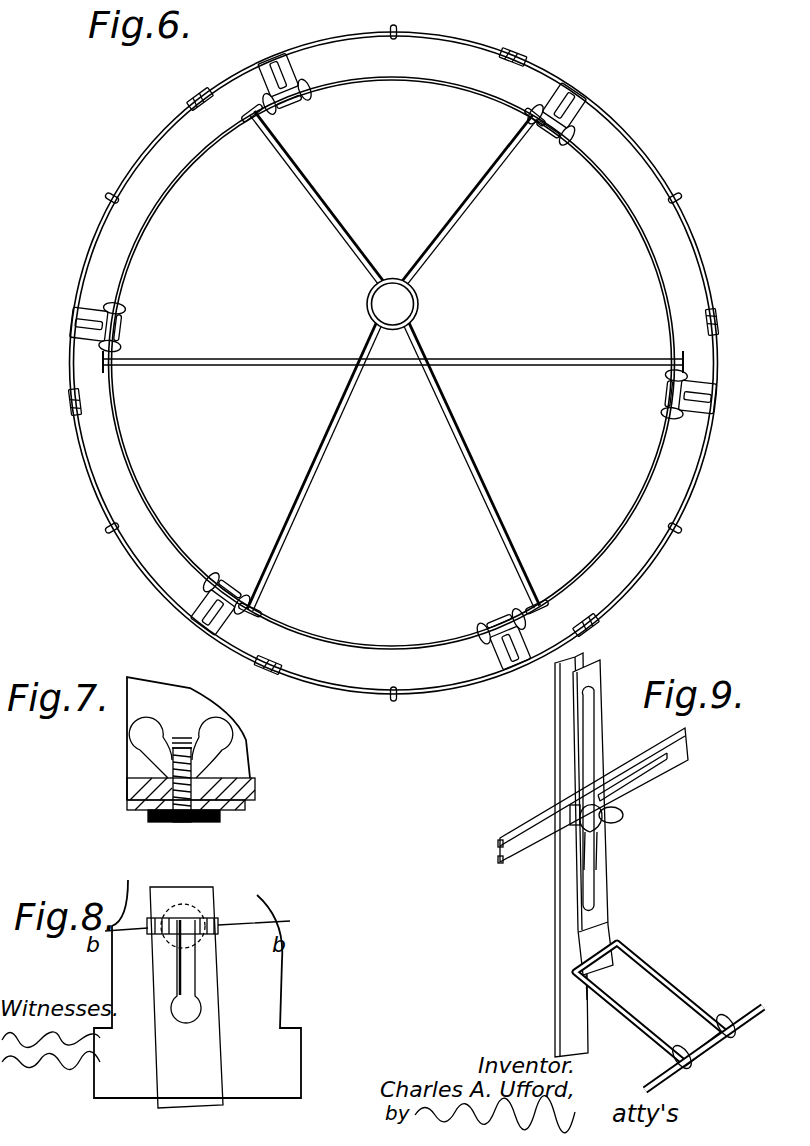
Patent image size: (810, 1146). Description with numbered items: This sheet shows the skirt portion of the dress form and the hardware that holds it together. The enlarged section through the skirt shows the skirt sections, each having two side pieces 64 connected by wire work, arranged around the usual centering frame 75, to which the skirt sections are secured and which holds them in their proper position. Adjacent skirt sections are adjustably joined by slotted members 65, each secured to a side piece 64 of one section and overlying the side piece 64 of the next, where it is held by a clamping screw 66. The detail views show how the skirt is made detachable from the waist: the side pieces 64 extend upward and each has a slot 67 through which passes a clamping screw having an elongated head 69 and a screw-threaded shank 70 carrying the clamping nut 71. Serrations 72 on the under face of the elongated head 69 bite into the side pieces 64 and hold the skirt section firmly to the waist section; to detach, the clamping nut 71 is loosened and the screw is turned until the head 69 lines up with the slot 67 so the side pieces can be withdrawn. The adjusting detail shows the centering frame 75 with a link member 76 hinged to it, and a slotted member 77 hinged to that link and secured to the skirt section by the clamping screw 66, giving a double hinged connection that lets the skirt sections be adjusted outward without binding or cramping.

In FIG. 6, the side piece 64 is at (577, 95).
In FIG. 7, the side piece 64 is at (222, 806).
In FIG. 8, the side piece 64 is at (195, 1052).
In FIG. 9, the side piece 64 is at (557, 884).
In FIG. 6, the slotted member 65 is at (637, 134).
In FIG. 9, the slotted member 65 is at (678, 762).
In FIG. 6, the clamping screw 66 is at (590, 97).
In FIG. 9, the clamping screw 66 is at (605, 823).
In FIG. 8, the slot 67 is at (188, 979).
In FIG. 7, the elongated head 69 is at (180, 825).
In FIG. 8, the elongated head 69 is at (258, 925).
In FIG. 7, the screw-threaded shank 70 is at (126, 800).
In FIG. 7, the clamping nut 71 is at (148, 756).
In FIG. 7, the serrations 72 is at (152, 822).
In FIG. 6, the centering frame 75 is at (636, 226).
In FIG. 9, the centering frame 75 is at (750, 1007).
In FIG. 6, the link member 76 is at (460, 638).
In FIG. 9, the link member 76 is at (638, 1027).
In FIG. 6, the slotted member 77 is at (590, 103).
In FIG. 9, the slotted member 77 is at (600, 746).